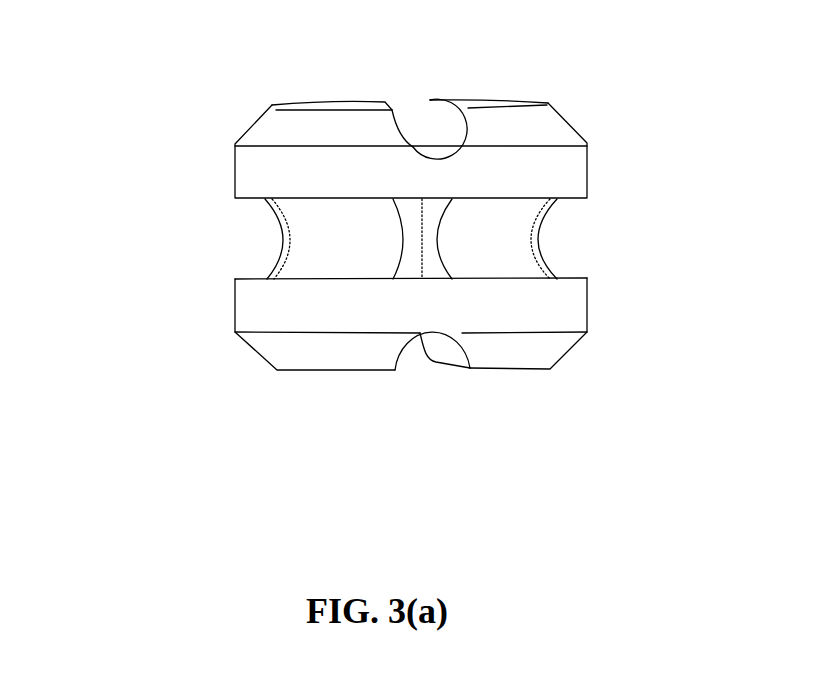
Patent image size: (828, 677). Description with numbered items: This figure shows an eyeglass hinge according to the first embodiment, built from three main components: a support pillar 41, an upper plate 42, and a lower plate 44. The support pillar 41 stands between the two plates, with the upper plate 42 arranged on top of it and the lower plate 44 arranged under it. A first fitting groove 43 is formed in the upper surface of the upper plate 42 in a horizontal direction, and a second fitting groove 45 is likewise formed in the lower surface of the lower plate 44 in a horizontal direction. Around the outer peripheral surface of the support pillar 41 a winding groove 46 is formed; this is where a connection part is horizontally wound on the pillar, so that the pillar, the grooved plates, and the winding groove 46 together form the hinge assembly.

The support pillar 41 is at (313, 237).
The upper plate 42 is at (242, 168).
The first fitting groove 43 is at (412, 117).
The lower plate 44 is at (247, 300).
The second fitting groove 45 is at (423, 353).
The winding groove 46 is at (565, 223).